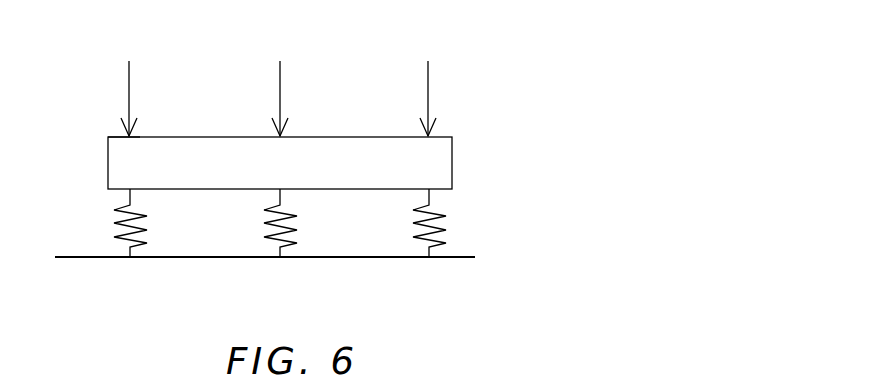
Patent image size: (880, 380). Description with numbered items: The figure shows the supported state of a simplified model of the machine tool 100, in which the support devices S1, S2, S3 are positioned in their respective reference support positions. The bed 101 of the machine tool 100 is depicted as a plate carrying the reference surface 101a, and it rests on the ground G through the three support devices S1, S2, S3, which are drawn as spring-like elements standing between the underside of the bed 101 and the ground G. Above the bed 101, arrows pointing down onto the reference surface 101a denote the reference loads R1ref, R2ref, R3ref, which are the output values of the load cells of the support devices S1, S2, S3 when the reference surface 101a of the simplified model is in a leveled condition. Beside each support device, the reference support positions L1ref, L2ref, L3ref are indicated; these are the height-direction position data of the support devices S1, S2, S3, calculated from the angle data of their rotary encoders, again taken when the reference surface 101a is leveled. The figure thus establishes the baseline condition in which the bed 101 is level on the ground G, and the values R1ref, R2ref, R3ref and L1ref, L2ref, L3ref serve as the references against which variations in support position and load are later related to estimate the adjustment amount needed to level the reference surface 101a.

The machine tool 100 is at (572, 70).
The bed 101 is at (452, 149).
The reference surface 101a is at (118, 137).
The ground G is at (86, 258).
The support device S1 is at (132, 240).
The support device S2 is at (282, 240).
The support device S3 is at (431, 240).
The reference load R1ref is at (134, 84).
The reference load R2ref is at (285, 84).
The reference load R3ref is at (433, 84).
The reference support position L1ref is at (164, 199).
The reference support position L2ref is at (314, 199).
The reference support position L3ref is at (464, 199).